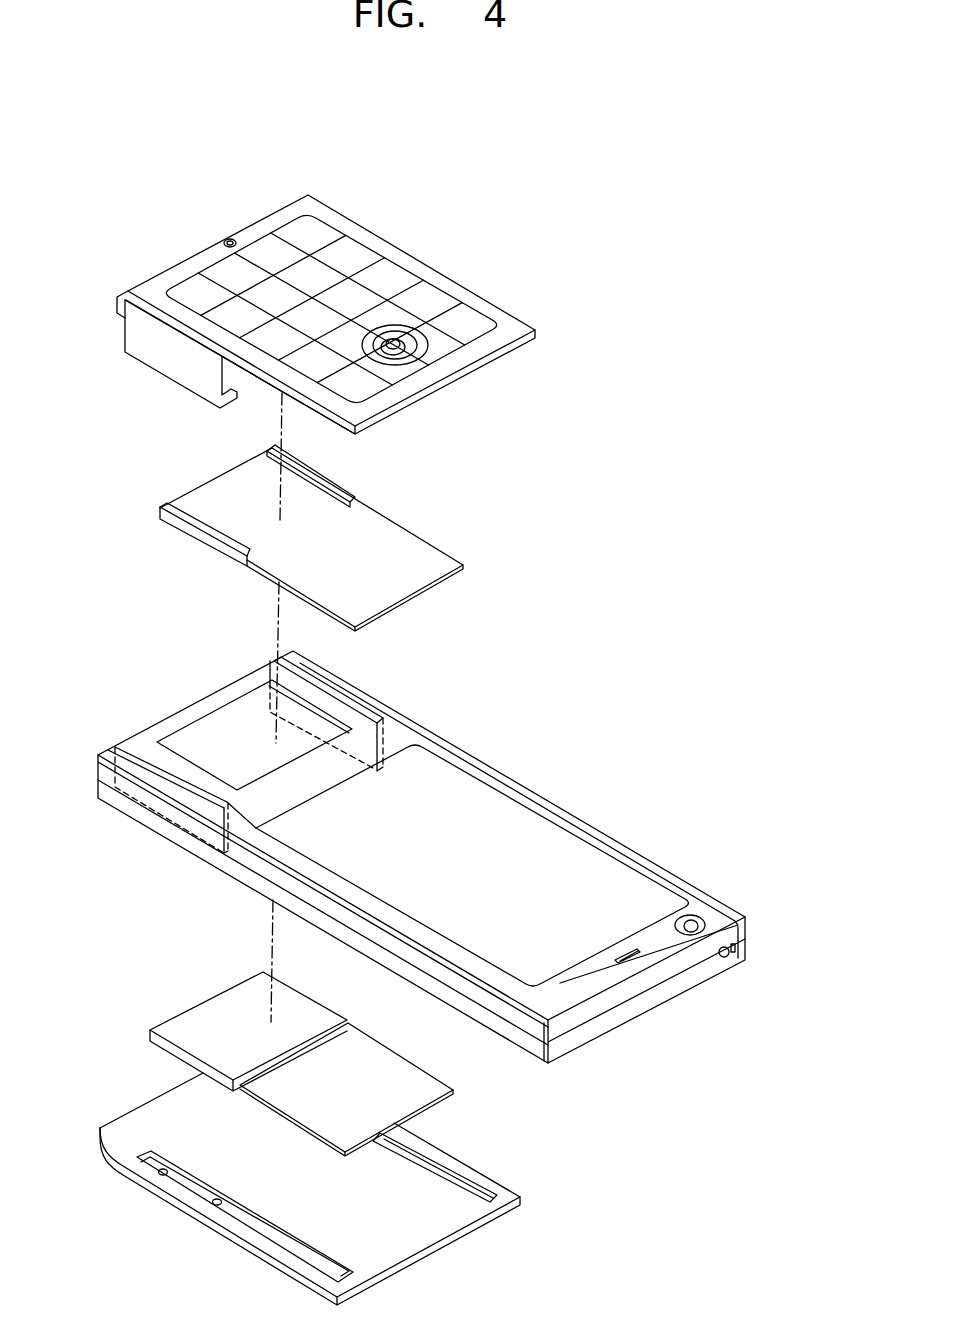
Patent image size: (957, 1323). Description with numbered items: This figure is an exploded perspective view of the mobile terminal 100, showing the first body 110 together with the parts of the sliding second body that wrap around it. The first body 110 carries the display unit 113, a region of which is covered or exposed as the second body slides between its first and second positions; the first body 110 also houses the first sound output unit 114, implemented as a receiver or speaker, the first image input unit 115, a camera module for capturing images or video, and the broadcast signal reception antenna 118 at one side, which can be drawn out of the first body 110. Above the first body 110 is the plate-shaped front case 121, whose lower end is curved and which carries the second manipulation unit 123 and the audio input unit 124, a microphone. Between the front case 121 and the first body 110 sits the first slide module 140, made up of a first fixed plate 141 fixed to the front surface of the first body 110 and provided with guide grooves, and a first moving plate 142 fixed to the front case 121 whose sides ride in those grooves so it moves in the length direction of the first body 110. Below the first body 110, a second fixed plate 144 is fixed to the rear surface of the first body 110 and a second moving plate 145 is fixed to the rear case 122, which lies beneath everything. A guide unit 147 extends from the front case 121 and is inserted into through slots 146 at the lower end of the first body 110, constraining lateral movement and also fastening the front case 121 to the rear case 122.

The mobile terminal 100 is at (722, 322).
The first body 110 is at (497, 757).
The display unit 113 is at (537, 826).
The first sound output unit 114 is at (632, 960).
The first image input unit 115 is at (702, 922).
The broadcast signal reception antenna 118 is at (729, 957).
The front case 121 is at (445, 280).
The rear case 122 is at (163, 1193).
The second manipulation unit 123 is at (348, 243).
The audio input unit 124 is at (227, 242).
The first slide module 140 is at (408, 442).
The first fixed plate 141 is at (338, 488).
The first moving plate 142 is at (383, 527).
The second fixed plate 144 is at (200, 1017).
The second moving plate 145 is at (283, 1102).
The through slots 146 is at (147, 758).
The guide unit 147 is at (162, 360).